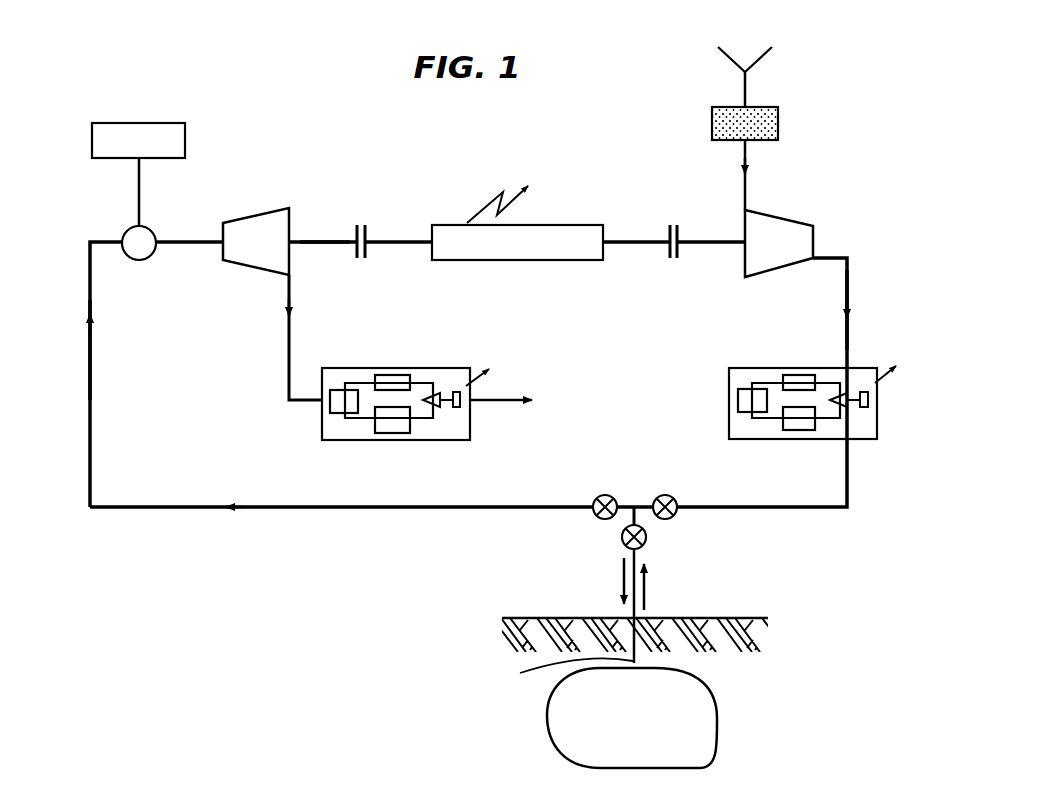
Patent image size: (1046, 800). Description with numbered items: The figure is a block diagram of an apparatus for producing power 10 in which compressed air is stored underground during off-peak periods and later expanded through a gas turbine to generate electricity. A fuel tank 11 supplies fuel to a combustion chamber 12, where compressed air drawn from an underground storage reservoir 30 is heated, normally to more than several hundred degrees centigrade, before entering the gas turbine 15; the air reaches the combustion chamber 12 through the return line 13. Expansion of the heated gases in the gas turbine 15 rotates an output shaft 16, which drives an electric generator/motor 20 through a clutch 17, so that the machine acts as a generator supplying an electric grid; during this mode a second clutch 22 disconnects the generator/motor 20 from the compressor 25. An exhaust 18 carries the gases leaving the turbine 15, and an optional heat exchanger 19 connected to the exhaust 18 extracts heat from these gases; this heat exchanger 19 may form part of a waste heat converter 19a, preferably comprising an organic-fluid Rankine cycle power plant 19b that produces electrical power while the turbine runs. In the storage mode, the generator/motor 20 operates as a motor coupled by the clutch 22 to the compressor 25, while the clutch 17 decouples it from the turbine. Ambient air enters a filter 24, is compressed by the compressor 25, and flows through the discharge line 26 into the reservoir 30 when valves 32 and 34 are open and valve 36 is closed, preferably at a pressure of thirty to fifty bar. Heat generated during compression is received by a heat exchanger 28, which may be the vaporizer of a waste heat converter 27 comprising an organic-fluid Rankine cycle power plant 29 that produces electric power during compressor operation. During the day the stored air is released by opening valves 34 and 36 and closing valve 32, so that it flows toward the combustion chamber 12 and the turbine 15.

The apparatus for producing power 10 is at (244, 128).
The fuel tank 11 is at (140, 123).
The combustion chamber 12 is at (133, 226).
The return gas line 13 is at (88, 298).
The gas turbine 15 is at (233, 222).
The output shaft 16 is at (320, 242).
The clutch 17 is at (368, 240).
The exhaust 18 is at (288, 380).
The heat exchanger 19 is at (388, 375).
The waste heat converter 19a is at (447, 372).
The organic-fluid Rankine cycle (ORC) power plant 19b is at (448, 432).
The electric generator/motor 20 is at (525, 222).
The clutch 22 is at (670, 230).
The filter 24 is at (737, 105).
The compressor 25 is at (793, 217).
The compressed air line 26 is at (847, 303).
The waste heat converter 27 is at (767, 368).
The heat exchanger 28 is at (798, 375).
The organic-fluid Rankine cycle (ORC) power plant 29 is at (788, 432).
The underground storage reservoir 30 is at (705, 700).
The valve 32 is at (665, 495).
The valve 34 is at (621, 538).
The valve 36 is at (603, 495).